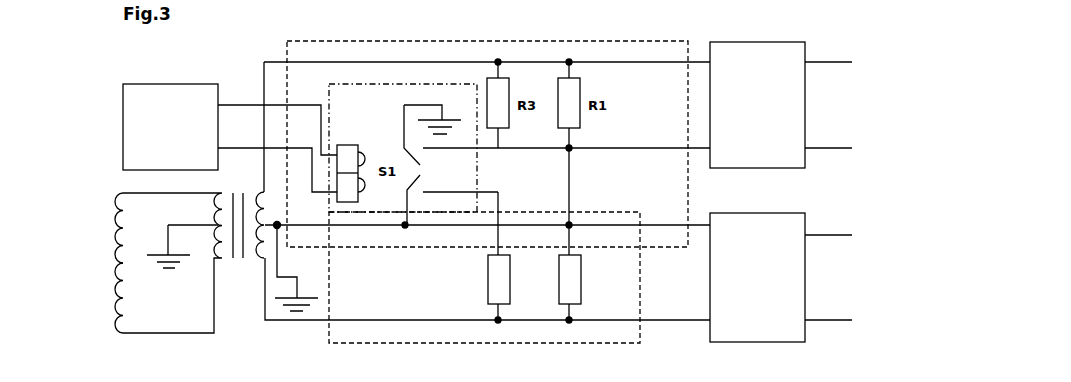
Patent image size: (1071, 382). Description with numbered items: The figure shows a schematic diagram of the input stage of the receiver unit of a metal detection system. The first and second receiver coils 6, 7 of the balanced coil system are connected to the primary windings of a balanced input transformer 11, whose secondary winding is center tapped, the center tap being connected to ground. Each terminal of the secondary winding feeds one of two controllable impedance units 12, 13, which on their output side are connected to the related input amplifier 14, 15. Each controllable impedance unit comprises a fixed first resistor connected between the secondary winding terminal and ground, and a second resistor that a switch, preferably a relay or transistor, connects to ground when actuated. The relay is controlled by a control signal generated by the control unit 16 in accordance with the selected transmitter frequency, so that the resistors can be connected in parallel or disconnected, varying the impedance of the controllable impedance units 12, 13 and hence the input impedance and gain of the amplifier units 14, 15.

The first receiver coil 6 is at (100, 233).
The second receiver coil 7 is at (103, 298).
The balanced input transformer 11 is at (240, 272).
The controllable impedance unit 12 is at (487, 267).
The controllable impedance unit 13 is at (484, 267).
The amplifier unit 14 is at (781, 105).
The input amplifier 15 is at (781, 277).
The control unit 16 is at (170, 127).